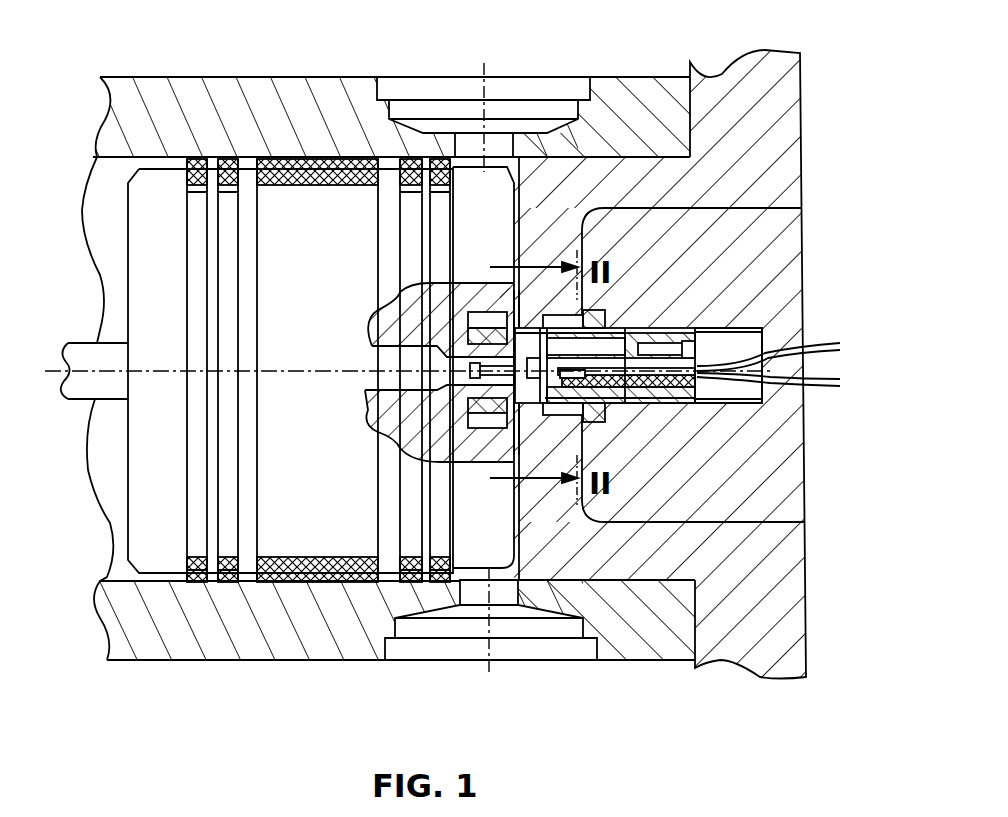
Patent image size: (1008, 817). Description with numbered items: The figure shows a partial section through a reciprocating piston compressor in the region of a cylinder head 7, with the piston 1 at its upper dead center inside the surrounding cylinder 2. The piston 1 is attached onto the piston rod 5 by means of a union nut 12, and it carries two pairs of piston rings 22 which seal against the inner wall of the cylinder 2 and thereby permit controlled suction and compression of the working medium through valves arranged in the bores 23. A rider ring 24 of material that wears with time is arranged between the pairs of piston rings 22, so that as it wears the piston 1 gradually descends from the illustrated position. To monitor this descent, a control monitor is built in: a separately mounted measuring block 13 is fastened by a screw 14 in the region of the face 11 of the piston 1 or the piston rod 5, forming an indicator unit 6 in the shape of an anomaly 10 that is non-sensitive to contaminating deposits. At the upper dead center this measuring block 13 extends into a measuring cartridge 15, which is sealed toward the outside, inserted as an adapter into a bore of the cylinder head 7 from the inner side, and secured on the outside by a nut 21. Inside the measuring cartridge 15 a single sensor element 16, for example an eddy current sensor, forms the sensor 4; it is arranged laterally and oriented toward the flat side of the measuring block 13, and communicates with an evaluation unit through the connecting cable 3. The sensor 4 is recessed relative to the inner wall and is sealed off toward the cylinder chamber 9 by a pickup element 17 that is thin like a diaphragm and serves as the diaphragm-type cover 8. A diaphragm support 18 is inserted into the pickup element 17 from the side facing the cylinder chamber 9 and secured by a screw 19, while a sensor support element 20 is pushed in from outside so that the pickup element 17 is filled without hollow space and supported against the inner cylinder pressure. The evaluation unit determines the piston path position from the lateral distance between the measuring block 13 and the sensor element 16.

The piston 1 is at (306, 423).
The cylinder 2 is at (263, 628).
The connecting cable 3 is at (840, 382).
The sensor 4 is at (640, 405).
The piston rod 5 is at (385, 355).
The indicator unit 6 is at (620, 342).
The cylinder head 7 is at (605, 548).
The diaphragm-type cover 8 is at (596, 343).
The cylinder chamber 9 is at (511, 575).
The anomaly 10 is at (522, 440).
The face 11 is at (511, 199).
The union nut 12 is at (460, 412).
The measuring block 13 is at (470, 335).
The screw 14 is at (470, 377).
The measuring cartridge 15 is at (690, 407).
The sensor element 16 is at (518, 457).
The pickup element 17 is at (510, 300).
The diaphragm support 18 is at (665, 335).
The screw 19 is at (720, 338).
The sensor support element 20 is at (742, 404).
The nut 21 is at (603, 410).
The piston rings 22 is at (233, 572).
The bores 23 is at (527, 92).
The rider ring 24 is at (333, 582).